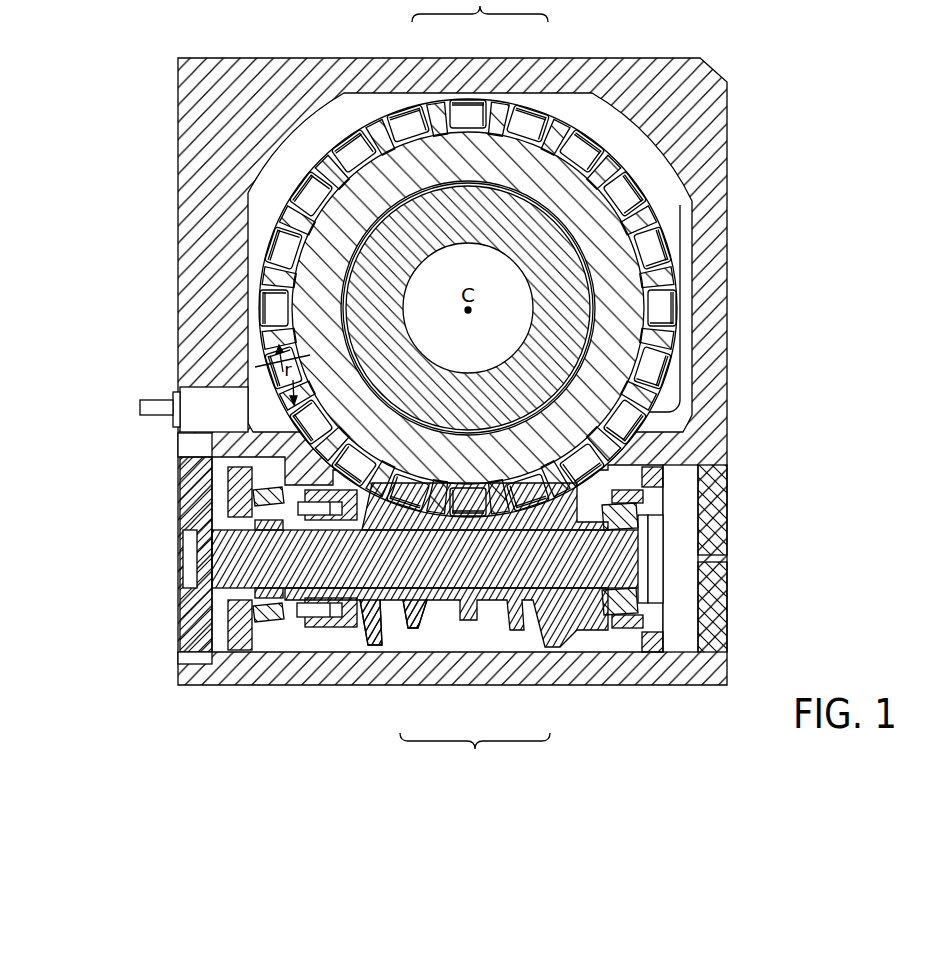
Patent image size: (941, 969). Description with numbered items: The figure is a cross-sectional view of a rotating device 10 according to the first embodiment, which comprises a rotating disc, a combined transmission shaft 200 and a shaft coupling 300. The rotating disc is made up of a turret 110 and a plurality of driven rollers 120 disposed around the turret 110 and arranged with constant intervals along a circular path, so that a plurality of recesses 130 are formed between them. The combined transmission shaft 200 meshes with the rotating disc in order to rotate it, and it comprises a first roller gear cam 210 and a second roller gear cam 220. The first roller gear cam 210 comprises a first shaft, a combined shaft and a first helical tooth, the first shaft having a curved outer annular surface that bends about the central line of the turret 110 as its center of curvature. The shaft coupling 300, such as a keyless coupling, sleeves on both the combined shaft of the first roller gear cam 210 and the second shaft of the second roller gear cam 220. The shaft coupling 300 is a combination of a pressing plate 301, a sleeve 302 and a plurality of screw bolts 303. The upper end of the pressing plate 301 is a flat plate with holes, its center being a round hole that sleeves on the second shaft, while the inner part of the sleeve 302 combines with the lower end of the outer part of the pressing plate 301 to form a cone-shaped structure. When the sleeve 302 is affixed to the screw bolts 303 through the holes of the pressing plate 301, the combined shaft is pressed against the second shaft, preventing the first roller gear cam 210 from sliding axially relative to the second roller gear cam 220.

The rotating device 10 is at (803, 96).
The turret 110 is at (505, 163).
The driven rollers 120 is at (465, 115).
The recesses 130 is at (640, 182).
The combined transmission shaft 200 is at (446, 626).
The first roller gear cam 210 is at (532, 640).
The second roller gear cam 220 is at (406, 642).
The shaft coupling 300 is at (310, 611).
The pressing plate 301 is at (298, 612).
The sleeve 302 is at (350, 625).
The screw bolts 303 is at (288, 613).